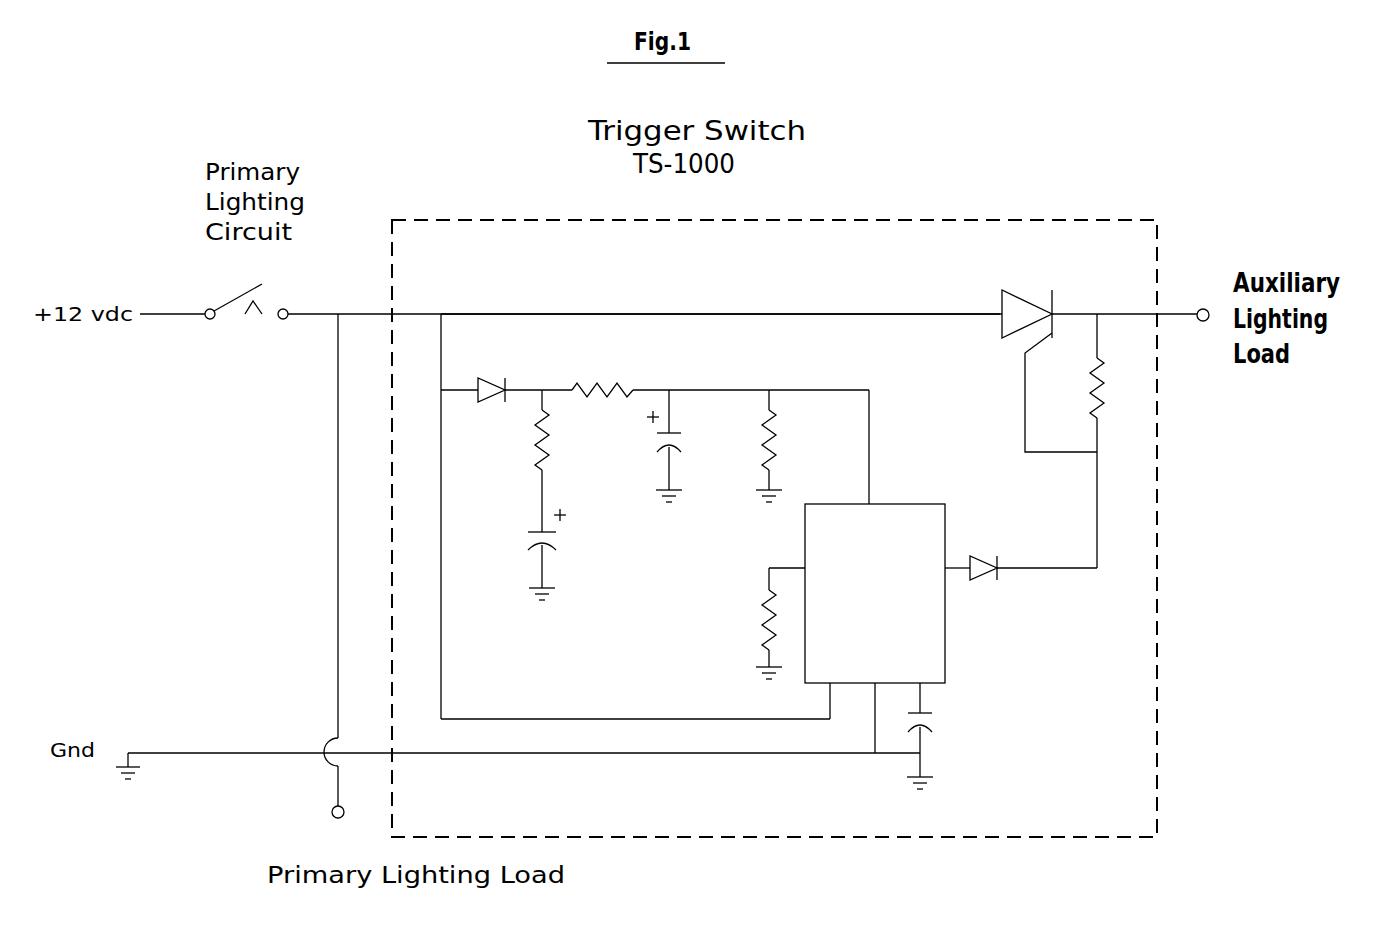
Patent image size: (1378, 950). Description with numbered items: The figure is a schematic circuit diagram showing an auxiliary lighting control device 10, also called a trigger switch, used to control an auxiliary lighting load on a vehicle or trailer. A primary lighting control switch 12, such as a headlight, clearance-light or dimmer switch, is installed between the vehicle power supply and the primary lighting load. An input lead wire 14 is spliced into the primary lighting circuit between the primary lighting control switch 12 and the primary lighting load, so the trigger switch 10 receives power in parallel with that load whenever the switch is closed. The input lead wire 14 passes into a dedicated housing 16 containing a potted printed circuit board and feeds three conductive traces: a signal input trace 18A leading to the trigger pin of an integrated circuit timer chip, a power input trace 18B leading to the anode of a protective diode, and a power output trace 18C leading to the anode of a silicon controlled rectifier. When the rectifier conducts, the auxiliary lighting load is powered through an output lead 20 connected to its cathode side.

The auxiliary lighting control device 10 is at (923, 170).
The primary lighting control switch 12 is at (238, 342).
The input lead wire 14 is at (328, 311).
The housing 16 is at (460, 218).
The signal input trace 18A is at (636, 716).
The power input trace 18B is at (450, 392).
The power output trace 18C is at (697, 311).
The output lead 20 is at (1183, 305).